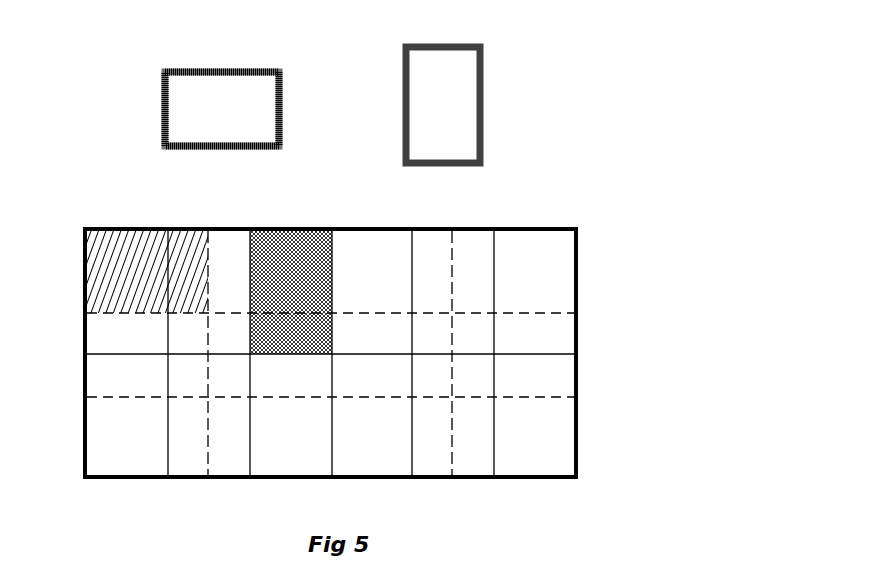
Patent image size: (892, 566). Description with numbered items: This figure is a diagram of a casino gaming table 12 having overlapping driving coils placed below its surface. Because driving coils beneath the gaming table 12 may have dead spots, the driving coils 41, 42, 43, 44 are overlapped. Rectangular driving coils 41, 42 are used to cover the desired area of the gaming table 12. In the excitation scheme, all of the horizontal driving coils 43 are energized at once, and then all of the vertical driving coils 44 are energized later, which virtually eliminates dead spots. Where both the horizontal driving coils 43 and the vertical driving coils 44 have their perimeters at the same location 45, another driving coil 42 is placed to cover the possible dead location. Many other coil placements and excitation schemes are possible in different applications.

The gaming table 12 is at (84, 228).
The rectangular driving coil 41 is at (205, 68).
The rectangular driving coil 42 is at (440, 43).
The horizontal driving coil 43 is at (122, 255).
The vertical driving coil 44 is at (287, 260).
The same location 45 is at (494, 312).